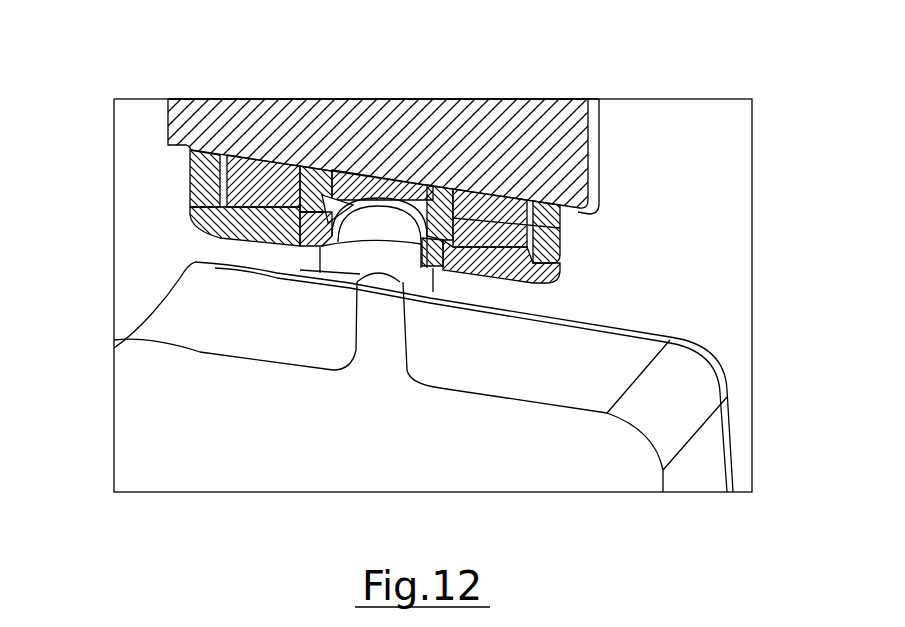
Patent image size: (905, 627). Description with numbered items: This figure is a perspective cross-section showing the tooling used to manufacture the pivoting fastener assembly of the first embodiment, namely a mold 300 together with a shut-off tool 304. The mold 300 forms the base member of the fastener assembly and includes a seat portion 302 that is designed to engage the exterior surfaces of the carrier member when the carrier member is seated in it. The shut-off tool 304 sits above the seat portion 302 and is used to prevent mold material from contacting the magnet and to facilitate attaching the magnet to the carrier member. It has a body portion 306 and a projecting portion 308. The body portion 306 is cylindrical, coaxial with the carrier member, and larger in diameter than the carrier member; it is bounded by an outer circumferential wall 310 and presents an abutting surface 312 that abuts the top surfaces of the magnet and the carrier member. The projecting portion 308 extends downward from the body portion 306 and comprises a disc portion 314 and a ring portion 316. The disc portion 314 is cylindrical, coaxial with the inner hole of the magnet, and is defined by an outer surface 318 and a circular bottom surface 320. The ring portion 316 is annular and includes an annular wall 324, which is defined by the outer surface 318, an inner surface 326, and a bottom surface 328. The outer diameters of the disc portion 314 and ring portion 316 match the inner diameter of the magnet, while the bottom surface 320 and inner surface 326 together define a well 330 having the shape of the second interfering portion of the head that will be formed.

The mold 300 is at (265, 498).
The seat portion 302 is at (600, 272).
The shut-off tool 304 is at (560, 99).
The body portion 306 is at (393, 99).
The projecting portion 308 is at (452, 228).
The outer circumferential wall 310 is at (592, 135).
The abutting surface 312 is at (188, 148).
The disc portion 314 is at (560, 230).
The ring portion 316 is at (560, 258).
The outer surface 318 is at (300, 180).
The bottom surface 320 is at (318, 262).
The annular wall 324 is at (322, 200).
The inner surface 326 is at (330, 237).
The bottom surface 328 is at (441, 268).
The well 330 is at (403, 242).